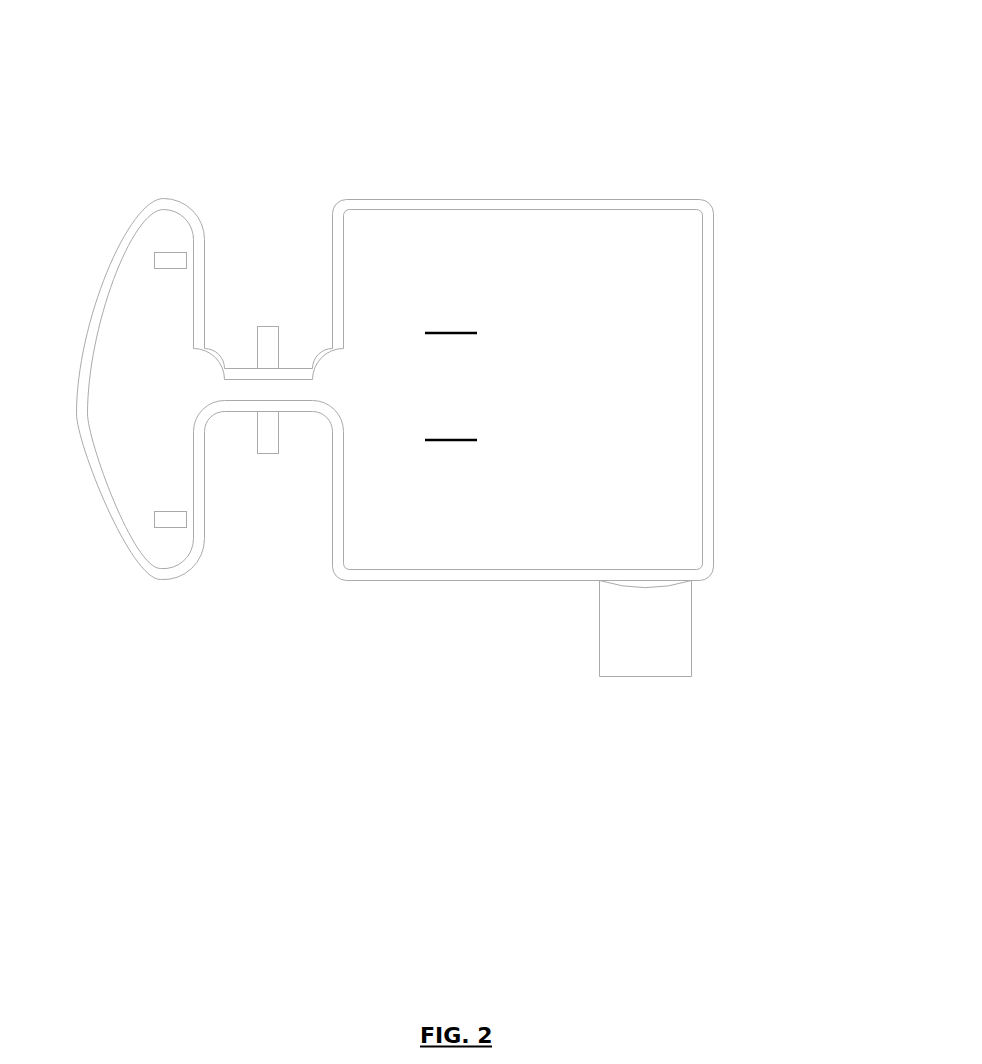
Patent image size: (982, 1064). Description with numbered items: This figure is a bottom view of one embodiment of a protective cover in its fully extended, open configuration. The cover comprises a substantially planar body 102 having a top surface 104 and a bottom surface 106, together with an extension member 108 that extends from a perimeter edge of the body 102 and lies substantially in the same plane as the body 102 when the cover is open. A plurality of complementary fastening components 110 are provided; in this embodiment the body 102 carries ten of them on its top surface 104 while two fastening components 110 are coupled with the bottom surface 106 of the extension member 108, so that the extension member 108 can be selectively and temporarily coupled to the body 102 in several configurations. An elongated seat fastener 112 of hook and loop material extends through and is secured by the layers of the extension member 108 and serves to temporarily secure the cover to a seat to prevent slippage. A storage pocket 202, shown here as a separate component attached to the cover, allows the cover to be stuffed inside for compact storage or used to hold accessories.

The substantially planar body 102 is at (609, 235).
The top surface 104 is at (713, 360).
The bottom surface 106 is at (675, 450).
The extension member 108 is at (125, 315).
The fastening components 110 is at (168, 260).
The seat fastener 112 is at (268, 430).
The storage pocket 202 is at (679, 648).